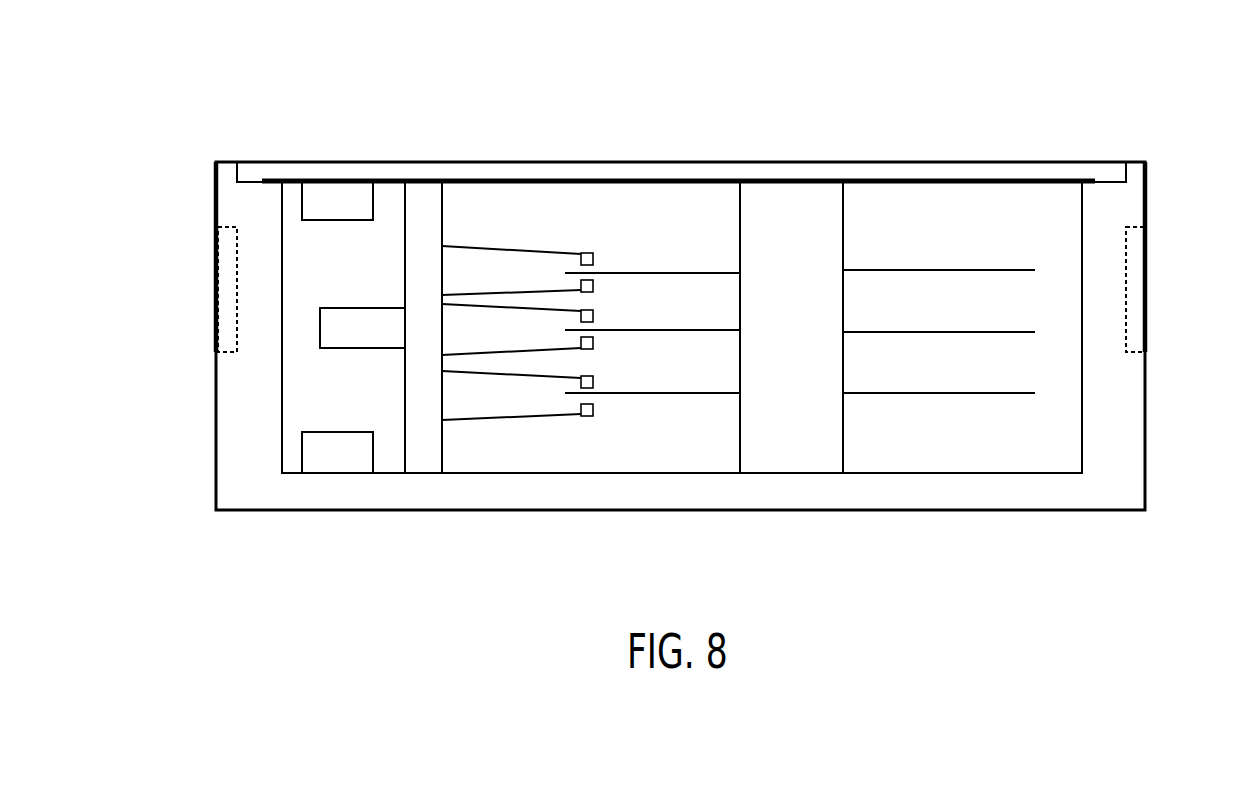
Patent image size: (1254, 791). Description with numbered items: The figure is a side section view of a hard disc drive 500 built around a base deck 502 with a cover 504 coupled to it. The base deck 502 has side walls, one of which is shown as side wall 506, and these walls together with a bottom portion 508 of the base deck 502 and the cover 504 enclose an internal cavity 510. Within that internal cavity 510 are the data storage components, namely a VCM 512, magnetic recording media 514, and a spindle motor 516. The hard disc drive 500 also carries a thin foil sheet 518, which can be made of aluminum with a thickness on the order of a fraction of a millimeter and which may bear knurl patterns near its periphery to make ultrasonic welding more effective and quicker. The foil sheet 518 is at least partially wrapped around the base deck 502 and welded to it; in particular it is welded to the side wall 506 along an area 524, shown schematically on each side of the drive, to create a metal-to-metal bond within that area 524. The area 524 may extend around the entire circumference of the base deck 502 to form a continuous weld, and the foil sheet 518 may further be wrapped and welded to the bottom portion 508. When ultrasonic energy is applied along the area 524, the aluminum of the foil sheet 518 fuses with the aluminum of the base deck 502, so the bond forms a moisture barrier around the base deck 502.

The hard disc drive 500 is at (270, 102).
The base deck 502 is at (1165, 388).
The cover 504 is at (707, 178).
The side wall 506 is at (228, 414).
The bottom portion 508 is at (466, 498).
The internal cavity 510 is at (930, 205).
The VCM 512 is at (360, 300).
The magnetic recording media 514 is at (622, 394).
The spindle motor 516 is at (752, 435).
The foil sheet 518 is at (548, 160).
The area 524 is at (222, 248).